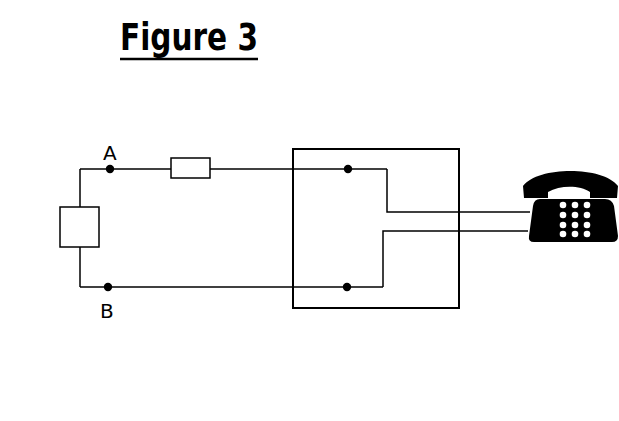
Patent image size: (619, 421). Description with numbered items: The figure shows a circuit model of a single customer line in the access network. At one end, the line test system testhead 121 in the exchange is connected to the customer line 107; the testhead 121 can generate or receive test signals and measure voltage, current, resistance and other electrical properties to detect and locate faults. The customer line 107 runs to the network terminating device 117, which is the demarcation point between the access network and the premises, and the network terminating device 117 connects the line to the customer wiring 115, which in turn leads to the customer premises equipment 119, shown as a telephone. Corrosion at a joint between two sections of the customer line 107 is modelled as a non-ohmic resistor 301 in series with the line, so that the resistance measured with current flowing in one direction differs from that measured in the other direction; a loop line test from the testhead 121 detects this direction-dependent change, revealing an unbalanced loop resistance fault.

The line test system testhead 121 is at (60, 228).
The non-ohmic resistor 301 is at (190, 157).
The customer line 107 is at (223, 288).
The network terminating device 117 is at (373, 309).
The customer wiring 115 is at (495, 232).
The customer premises equipment 119 is at (582, 172).